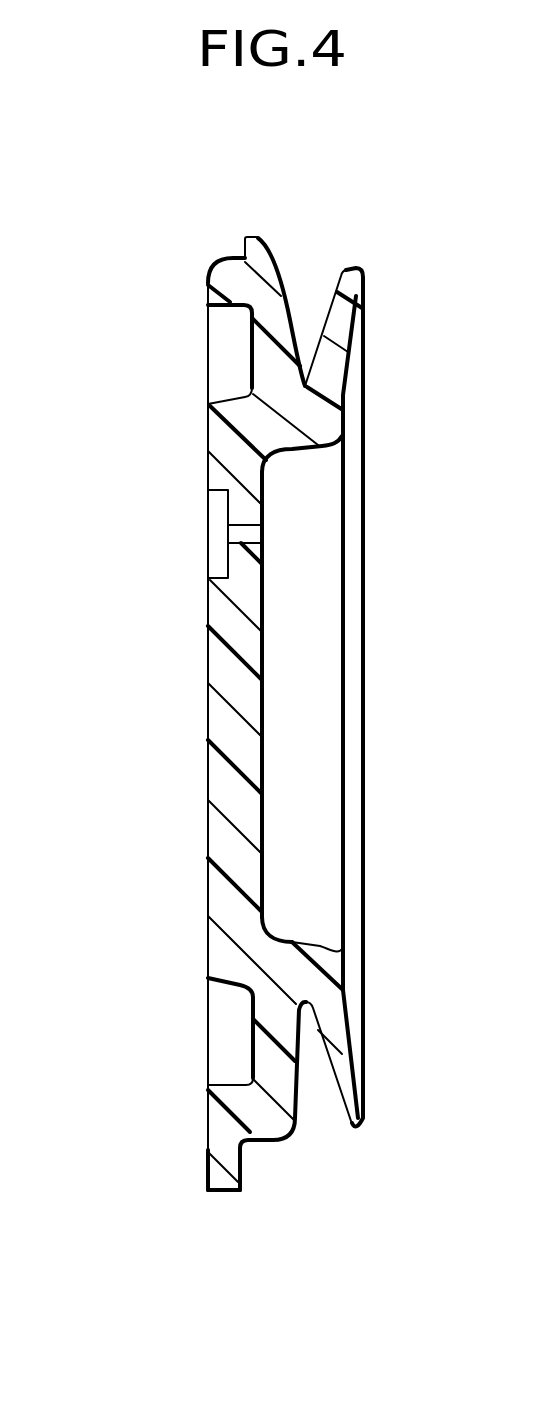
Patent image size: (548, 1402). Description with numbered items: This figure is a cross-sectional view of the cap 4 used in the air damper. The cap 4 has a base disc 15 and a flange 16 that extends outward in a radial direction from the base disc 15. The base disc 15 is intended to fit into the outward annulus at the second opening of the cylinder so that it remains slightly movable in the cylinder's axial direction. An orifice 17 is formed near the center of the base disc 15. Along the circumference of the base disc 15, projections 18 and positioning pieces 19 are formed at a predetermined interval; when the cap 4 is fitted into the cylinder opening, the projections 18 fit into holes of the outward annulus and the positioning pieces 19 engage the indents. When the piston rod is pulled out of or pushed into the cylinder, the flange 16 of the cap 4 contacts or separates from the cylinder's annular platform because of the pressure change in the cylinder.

The cap 4 is at (195, 884).
The base disc 15 is at (223, 720).
The flange 16 is at (363, 302).
The orifice 17 is at (237, 537).
The projections 18 is at (262, 272).
The positioning pieces 19 is at (225, 1177).